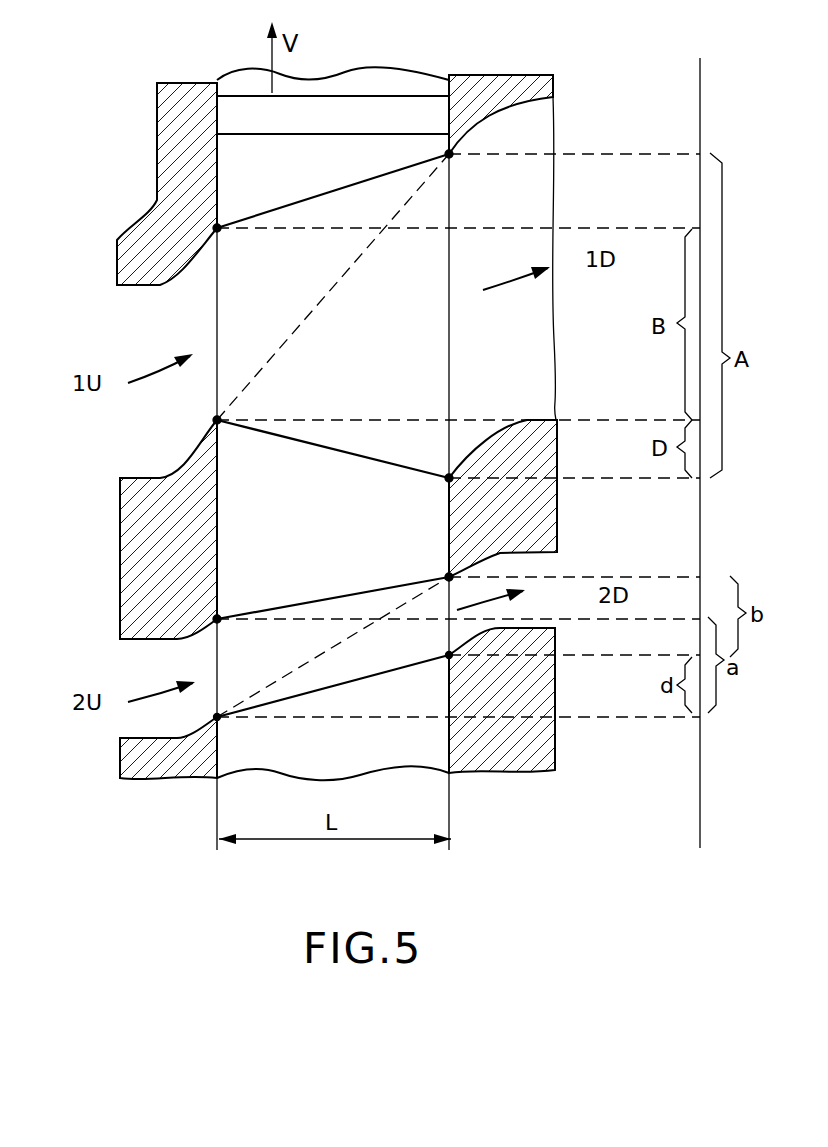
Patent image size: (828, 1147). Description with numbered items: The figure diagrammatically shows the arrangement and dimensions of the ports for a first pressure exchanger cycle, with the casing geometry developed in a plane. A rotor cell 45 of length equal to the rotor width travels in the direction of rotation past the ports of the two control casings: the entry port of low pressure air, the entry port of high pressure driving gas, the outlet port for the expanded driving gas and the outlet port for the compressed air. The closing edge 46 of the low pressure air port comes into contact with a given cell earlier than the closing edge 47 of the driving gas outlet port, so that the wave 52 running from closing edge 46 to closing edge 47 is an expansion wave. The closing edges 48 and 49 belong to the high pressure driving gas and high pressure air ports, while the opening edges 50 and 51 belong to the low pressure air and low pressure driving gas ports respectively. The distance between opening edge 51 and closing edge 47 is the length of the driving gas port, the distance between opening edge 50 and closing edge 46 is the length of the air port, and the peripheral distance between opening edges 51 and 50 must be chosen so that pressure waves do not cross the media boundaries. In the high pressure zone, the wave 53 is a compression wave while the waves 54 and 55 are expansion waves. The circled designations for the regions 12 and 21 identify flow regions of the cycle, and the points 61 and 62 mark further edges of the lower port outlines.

The region 12 is at (336, 427).
The region 21 is at (338, 529).
The cell 45 is at (333, 115).
The closing edge of port 1U 46 is at (219, 225).
The closing edge of port 1D 47 is at (452, 157).
The closing edge of port 2U 48 is at (220, 615).
The closing edge of port 2D 49 is at (446, 574).
The opening edge of port 1U 50 is at (213, 419).
The opening edge of port 1D 51 is at (446, 481).
The expansion wave 52 is at (362, 183).
The compression wave 53 is at (400, 670).
The expansion wave 54 is at (333, 597).
The expansion wave 55 is at (302, 442).
The lower upstream edge point 61 is at (220, 720).
The lower downstream edge point 62 is at (448, 658).